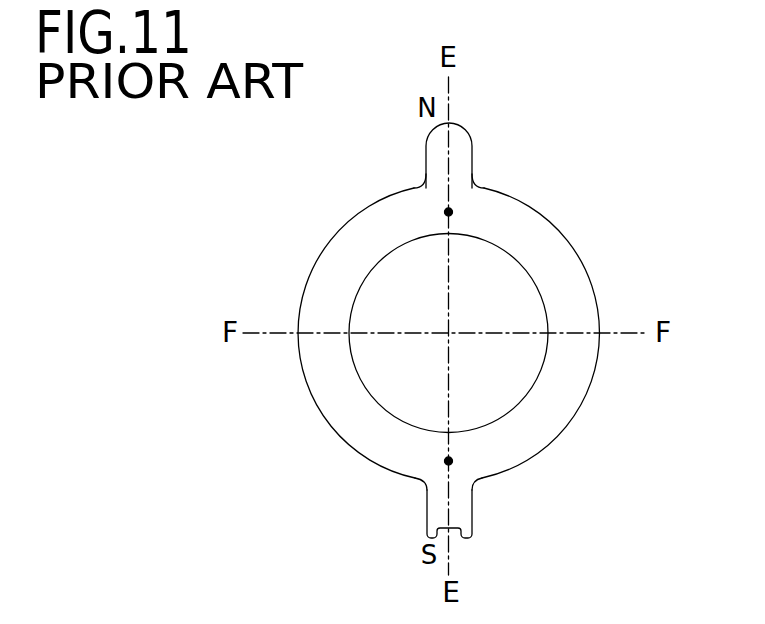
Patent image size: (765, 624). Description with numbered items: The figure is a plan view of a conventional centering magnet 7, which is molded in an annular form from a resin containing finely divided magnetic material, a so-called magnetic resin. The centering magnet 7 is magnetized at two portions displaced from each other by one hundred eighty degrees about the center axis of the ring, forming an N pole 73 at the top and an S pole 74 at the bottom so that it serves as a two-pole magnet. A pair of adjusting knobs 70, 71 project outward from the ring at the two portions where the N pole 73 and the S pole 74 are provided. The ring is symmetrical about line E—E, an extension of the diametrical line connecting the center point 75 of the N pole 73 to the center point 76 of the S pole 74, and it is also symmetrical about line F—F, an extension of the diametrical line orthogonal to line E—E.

The centering magnet 7 is at (477, 124).
The adjusting knob 70 is at (472, 141).
The adjusting knob 71 is at (472, 517).
The N pole 73 is at (465, 213).
The S pole 74 is at (467, 455).
The center point of the N pole 75 is at (445, 210).
The center point of the S pole 76 is at (425, 483).